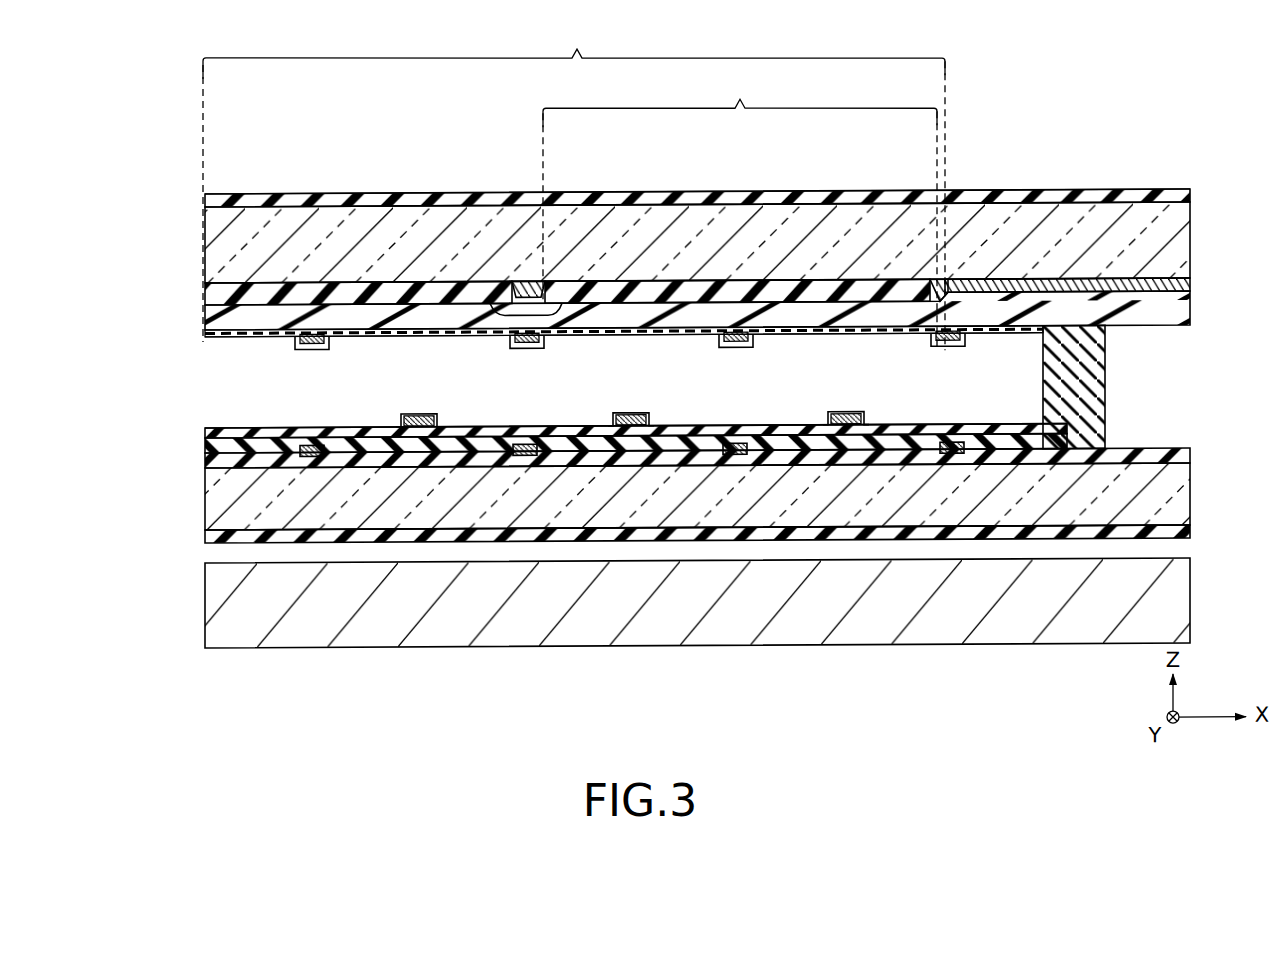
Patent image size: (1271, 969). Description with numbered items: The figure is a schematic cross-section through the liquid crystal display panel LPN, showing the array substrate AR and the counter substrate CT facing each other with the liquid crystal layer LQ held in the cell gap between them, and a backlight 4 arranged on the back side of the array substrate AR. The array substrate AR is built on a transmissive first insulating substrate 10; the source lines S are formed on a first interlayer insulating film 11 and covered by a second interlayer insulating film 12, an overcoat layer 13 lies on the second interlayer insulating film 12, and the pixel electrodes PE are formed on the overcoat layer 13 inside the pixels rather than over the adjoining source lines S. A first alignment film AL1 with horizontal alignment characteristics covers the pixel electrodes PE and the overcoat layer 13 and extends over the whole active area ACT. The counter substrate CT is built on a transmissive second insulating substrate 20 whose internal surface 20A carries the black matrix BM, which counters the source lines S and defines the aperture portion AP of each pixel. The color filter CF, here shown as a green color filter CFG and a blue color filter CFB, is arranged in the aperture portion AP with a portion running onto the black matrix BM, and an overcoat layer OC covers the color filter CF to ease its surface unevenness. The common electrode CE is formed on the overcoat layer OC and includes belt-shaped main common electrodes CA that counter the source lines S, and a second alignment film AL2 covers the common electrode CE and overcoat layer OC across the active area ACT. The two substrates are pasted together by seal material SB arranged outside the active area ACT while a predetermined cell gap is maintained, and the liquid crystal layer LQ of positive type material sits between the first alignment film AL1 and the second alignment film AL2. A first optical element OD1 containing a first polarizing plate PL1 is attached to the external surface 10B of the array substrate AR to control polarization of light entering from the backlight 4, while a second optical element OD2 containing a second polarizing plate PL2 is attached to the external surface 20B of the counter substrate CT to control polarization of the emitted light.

The active area ACT is at (574, 186).
The aperture portion AP is at (740, 212).
The liquid crystal display panel LPN is at (1192, 221).
The counter substrate CT is at (203, 254).
The array substrate AR is at (203, 500).
The liquid crystal layer LQ is at (215, 427).
The seal material SB is at (1097, 394).
The second insulating substrate 20 is at (1180, 243).
The internal surface 20A is at (226, 309).
The external surface 20B is at (240, 196).
The second optical element OD2 is at (652, 199).
The second polarizing plate PL2 is at (215, 202).
The color filter CF is at (538, 226).
The green color filter CFG is at (422, 296).
The blue color filter CFB is at (620, 297).
The black matrix BM is at (527, 300).
The overcoat layer OC is at (1186, 324).
The common electrode CE is at (290, 344).
The main common electrode CA is at (312, 338).
The second alignment film AL2 is at (1030, 339).
The first alignment film AL1 is at (1040, 430).
The pixel electrode PE is at (419, 432).
The source line S is at (312, 460).
The overcoat layer 13 is at (895, 432).
The second interlayer insulating film 12 is at (995, 445).
The first interlayer insulating film 11 is at (1185, 465).
The first insulating substrate 10 is at (1185, 506).
The first optical element OD1 is at (651, 536).
The first polarizing plate PL1 is at (215, 538).
The external surface 10B is at (243, 543).
The backlight 4 is at (210, 619).